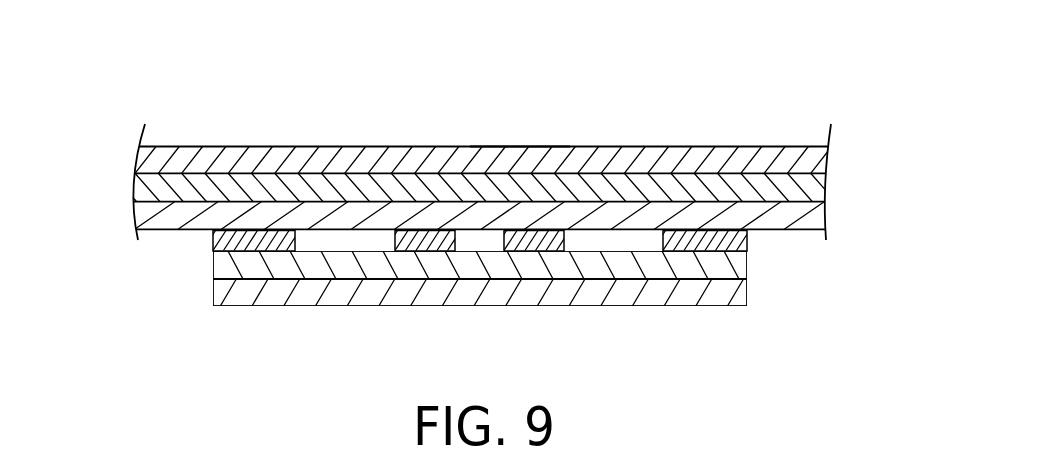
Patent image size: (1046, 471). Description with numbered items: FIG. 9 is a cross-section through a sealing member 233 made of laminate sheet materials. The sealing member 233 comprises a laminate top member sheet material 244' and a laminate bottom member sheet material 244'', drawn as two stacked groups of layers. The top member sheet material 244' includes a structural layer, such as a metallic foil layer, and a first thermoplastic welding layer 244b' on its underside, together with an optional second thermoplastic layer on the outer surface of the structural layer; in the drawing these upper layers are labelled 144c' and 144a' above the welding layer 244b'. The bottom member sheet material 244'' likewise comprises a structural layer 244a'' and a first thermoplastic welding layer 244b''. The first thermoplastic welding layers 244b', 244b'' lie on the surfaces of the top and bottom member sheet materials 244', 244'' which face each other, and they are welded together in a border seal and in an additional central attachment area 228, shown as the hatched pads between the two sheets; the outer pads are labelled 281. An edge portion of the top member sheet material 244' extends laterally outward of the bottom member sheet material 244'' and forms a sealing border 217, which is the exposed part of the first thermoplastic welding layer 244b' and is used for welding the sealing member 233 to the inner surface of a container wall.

The sealing member 233 is at (699, 109).
The sealing border 217 is at (520, 147).
The upper layer 144c' is at (505, 152).
The middle layer 144a' is at (505, 183).
The first thermoplastic welding layer 244b' is at (476, 213).
The laminate top member sheet material 244' is at (476, 181).
The laminate bottom member sheet material 244'' is at (459, 293).
The first thermoplastic welding layer 244b'' is at (517, 275).
The structural layer 244a'' is at (529, 304).
The outer pad 281 is at (262, 245).
The central attachment area 228 is at (423, 245).